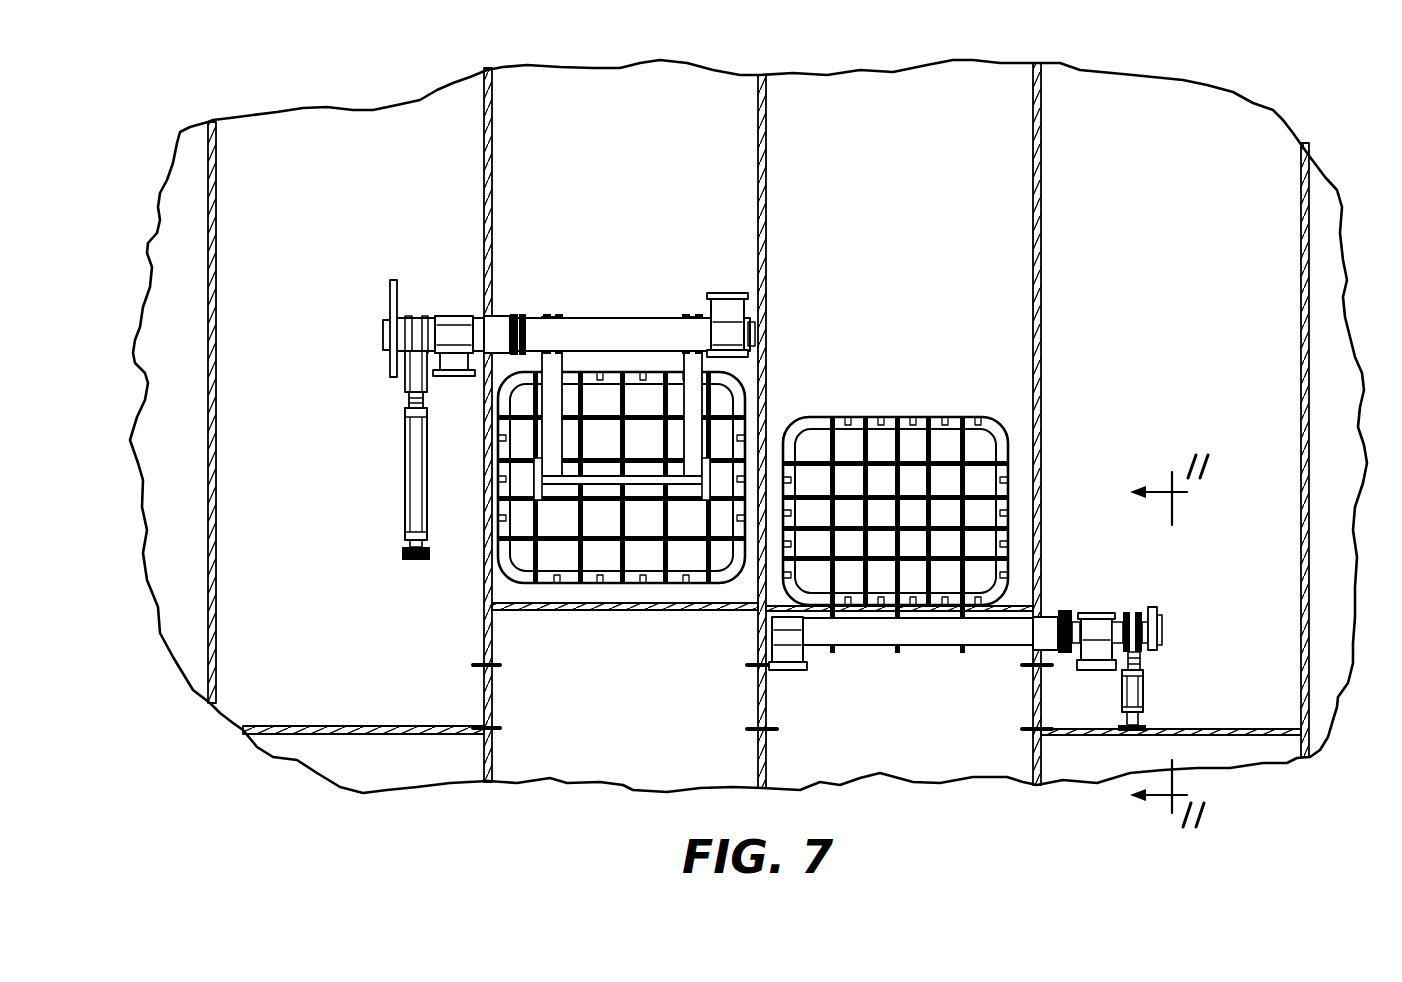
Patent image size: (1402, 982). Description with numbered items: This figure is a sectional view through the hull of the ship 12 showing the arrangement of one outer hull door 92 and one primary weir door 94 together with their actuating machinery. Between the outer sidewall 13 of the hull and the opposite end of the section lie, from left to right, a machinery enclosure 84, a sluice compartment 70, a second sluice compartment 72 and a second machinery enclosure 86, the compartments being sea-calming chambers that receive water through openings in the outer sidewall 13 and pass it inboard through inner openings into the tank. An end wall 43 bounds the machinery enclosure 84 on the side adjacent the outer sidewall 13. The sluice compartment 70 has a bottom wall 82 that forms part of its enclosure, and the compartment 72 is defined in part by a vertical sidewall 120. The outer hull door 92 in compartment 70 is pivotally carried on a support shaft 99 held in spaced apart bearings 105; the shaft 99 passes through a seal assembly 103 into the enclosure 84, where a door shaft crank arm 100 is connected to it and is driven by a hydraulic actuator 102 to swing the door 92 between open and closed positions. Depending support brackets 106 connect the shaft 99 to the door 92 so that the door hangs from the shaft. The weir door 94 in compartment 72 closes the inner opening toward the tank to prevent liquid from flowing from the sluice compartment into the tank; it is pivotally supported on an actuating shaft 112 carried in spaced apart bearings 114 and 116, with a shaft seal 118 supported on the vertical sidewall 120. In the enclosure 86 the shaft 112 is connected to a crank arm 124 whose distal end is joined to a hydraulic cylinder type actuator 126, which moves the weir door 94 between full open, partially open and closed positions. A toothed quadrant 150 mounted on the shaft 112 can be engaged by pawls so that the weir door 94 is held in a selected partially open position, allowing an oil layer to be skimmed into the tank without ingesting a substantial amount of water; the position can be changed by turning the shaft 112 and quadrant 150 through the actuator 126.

The ship 12 is at (1292, 105).
The outer sidewall 13 is at (145, 528).
The end bulkhead 43 is at (217, 416).
The machinery enclosure 84 is at (314, 205).
The sluice compartment 70 is at (641, 190).
The sluice compartment 72 is at (913, 198).
The machinery enclosure 86 is at (1148, 213).
The bottom wall 82 is at (545, 610).
The outer hull door 92 is at (643, 552).
The weir door 94 is at (870, 417).
The support shaft 99 is at (657, 317).
The door shaft crank arm 100 is at (404, 364).
The hydraulic actuator 102 is at (403, 478).
The seal assembly 103 is at (497, 314).
The bearings 105 is at (455, 314).
The depending support brackets 106 is at (682, 363).
The actuating shaft 112 is at (922, 647).
The bearing 114 is at (790, 672).
The bearing 116 is at (1093, 613).
The shaft seal 118 is at (1045, 617).
The vertical sidewall 120 is at (1043, 337).
The crank arm 124 is at (1162, 632).
The hydraulic cylinder type actuator 126 is at (1148, 680).
The toothed quadrant 150 is at (1153, 607).